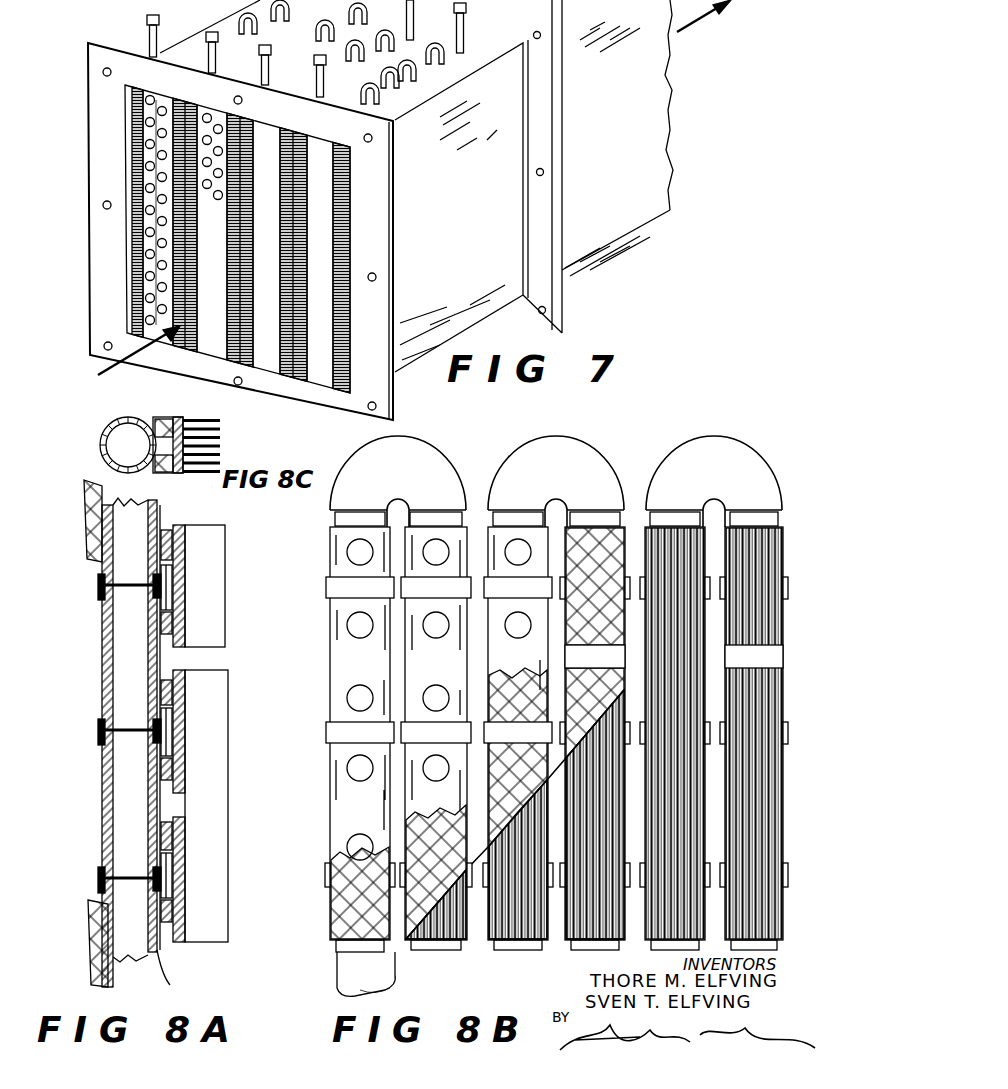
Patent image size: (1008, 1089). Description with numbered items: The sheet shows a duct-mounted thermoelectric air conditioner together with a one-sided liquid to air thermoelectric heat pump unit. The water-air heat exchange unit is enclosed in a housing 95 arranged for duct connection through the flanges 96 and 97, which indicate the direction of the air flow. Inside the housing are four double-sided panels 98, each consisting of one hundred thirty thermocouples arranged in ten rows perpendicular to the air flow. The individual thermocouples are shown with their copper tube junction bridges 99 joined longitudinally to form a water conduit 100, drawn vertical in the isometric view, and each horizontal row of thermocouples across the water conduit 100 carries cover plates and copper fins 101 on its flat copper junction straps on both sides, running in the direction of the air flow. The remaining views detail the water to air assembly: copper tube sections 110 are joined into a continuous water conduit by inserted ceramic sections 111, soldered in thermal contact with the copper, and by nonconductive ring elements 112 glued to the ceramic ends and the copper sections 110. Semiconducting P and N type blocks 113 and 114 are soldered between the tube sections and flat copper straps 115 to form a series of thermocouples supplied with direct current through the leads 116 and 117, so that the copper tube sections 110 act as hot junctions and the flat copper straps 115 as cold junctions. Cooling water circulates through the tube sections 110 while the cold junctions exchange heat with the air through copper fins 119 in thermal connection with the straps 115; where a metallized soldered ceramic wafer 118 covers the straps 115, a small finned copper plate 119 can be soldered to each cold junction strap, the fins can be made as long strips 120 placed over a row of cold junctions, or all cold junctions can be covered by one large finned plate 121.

In FIG. 7, the housing 95 is at (423, 260).
In FIG. 7, the flange 96 is at (366, 253).
In FIG. 7, the flange 97 is at (540, 142).
In FIG. 7, the double-sided panel 98 is at (269, 212).
In FIG. 7, the copper tube junction bridge 99 is at (152, 121).
In FIG. 7, the water conduit 100 is at (150, 50).
In FIG. 7, the copper fins 101 is at (140, 157).
In FIG. 8A, the copper tube section 110 is at (107, 633).
In FIG. 8B, the copper tube section 110 is at (360, 663).
In FIG. 8A, the ceramic section 111 is at (107, 562).
In FIG. 8B, the ceramic section 111 is at (352, 520).
In FIG. 8A, the nonconductive ring element 112 is at (100, 583).
In FIG. 8B, the nonconductive ring element 112 is at (350, 587).
In FIG. 8A, the P type semiconducting block 113 is at (165, 550).
In FIG. 8B, the P type semiconducting block 113 is at (355, 552).
In FIG. 8A, the N type semiconducting block 114 is at (167, 623).
In FIG. 8B, the N type semiconducting block 114 is at (357, 625).
In FIG. 8A, the flat copper strap 115 is at (177, 600).
In FIG. 8B, the flat copper strap 115 is at (362, 925).
In FIG. 8A, the lead 116 is at (83, 500).
In FIG. 8A, the lead 117 is at (92, 960).
In FIG. 8A, the metallized soldered ceramic wafer 118 is at (180, 525).
In FIG. 8C, the finned copper plate 119 is at (185, 458).
In FIG. 8A, the finned copper plate 119 is at (205, 553).
In FIG. 8B, the finned copper plate 119 is at (745, 573).
In FIG. 8C, the fin strip 120 is at (168, 445).
In FIG. 8A, the fin strip 120 is at (208, 793).
In FIG. 8B, the fin strip 120 is at (758, 715).
In FIG. 8B, the large finned plate 121 is at (535, 948).